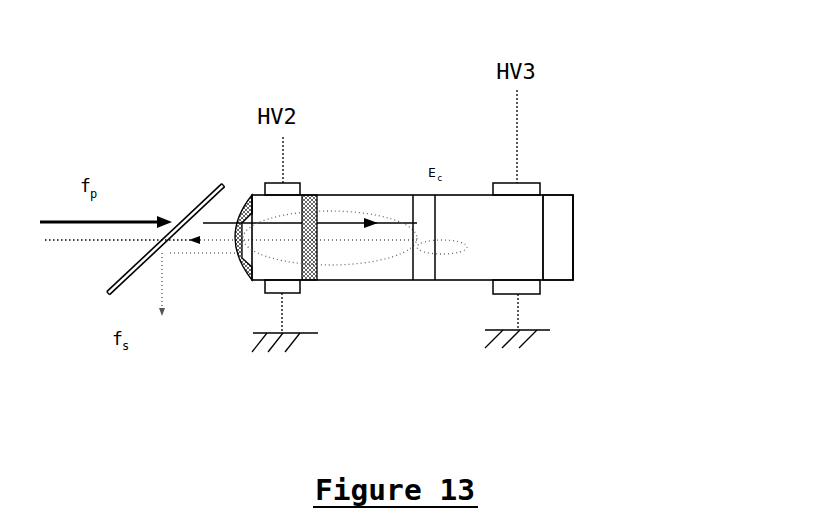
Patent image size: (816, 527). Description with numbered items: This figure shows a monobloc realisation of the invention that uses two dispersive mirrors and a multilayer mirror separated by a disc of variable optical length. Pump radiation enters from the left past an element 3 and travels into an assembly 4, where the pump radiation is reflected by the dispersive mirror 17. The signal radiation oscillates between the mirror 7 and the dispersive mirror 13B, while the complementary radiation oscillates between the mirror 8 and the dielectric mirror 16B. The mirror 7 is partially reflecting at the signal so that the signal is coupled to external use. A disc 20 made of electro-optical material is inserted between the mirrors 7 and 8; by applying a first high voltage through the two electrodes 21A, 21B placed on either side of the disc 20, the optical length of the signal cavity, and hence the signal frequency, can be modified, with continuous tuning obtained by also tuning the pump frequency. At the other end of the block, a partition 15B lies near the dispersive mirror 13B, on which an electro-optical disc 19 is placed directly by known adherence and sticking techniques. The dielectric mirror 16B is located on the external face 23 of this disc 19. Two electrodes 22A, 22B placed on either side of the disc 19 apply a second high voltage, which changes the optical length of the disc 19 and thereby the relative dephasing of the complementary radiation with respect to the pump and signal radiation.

The beam splitter mirror 3 is at (203, 198).
The laser tube body 4 is at (383, 282).
The mirror 7 is at (237, 276).
The mirror 8 is at (310, 282).
The dispersive mirror 13B is at (468, 193).
The partition wall 15B is at (432, 282).
The dielectric mirror 16B is at (573, 233).
The dispersive mirror 17 is at (420, 193).
The electro-optical disc 19 is at (533, 205).
The disc 20 is at (251, 194).
The electrode 21A is at (293, 194).
The electrode 21B is at (273, 297).
The electrode 22A is at (540, 183).
The electrode 22B is at (540, 294).
The external face 23 is at (543, 255).